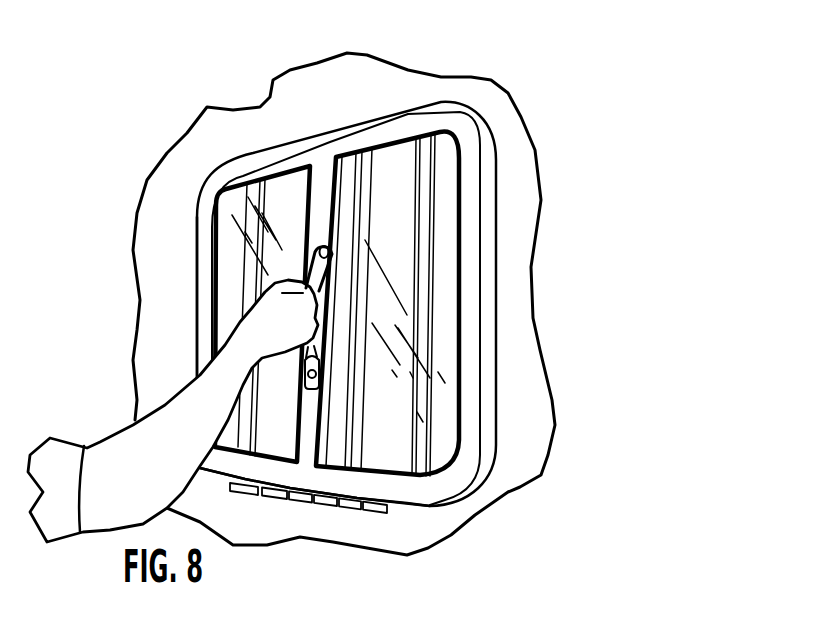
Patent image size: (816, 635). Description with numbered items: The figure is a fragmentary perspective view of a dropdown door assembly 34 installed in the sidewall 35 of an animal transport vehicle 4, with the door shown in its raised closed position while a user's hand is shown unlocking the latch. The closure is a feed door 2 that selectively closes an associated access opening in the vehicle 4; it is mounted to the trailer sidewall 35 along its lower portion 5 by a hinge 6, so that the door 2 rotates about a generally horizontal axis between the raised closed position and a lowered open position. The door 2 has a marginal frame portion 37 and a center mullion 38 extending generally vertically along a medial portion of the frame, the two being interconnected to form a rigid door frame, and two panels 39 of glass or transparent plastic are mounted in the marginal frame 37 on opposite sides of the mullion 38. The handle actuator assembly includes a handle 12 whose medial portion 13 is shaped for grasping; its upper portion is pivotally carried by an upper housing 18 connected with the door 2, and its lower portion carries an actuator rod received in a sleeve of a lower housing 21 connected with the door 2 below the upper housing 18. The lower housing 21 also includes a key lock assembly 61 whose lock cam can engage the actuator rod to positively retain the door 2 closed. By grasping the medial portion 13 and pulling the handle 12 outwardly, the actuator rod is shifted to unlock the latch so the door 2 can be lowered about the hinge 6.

The feed door 2 is at (491, 150).
The vehicle 4 is at (471, 77).
The lower portion 5 is at (441, 488).
The hinge 6 is at (350, 505).
The handle 12 is at (320, 293).
The medial portion 13 is at (307, 268).
The upper housing 18 is at (328, 242).
The lower housing 21 is at (302, 376).
The dropdown door assembly 34 is at (209, 168).
The sidewall 35 is at (535, 431).
The marginal frame portion 37 is at (200, 322).
The center mullion 38 is at (318, 190).
The panels 39 is at (227, 273).
The key lock assembly 61 is at (323, 388).